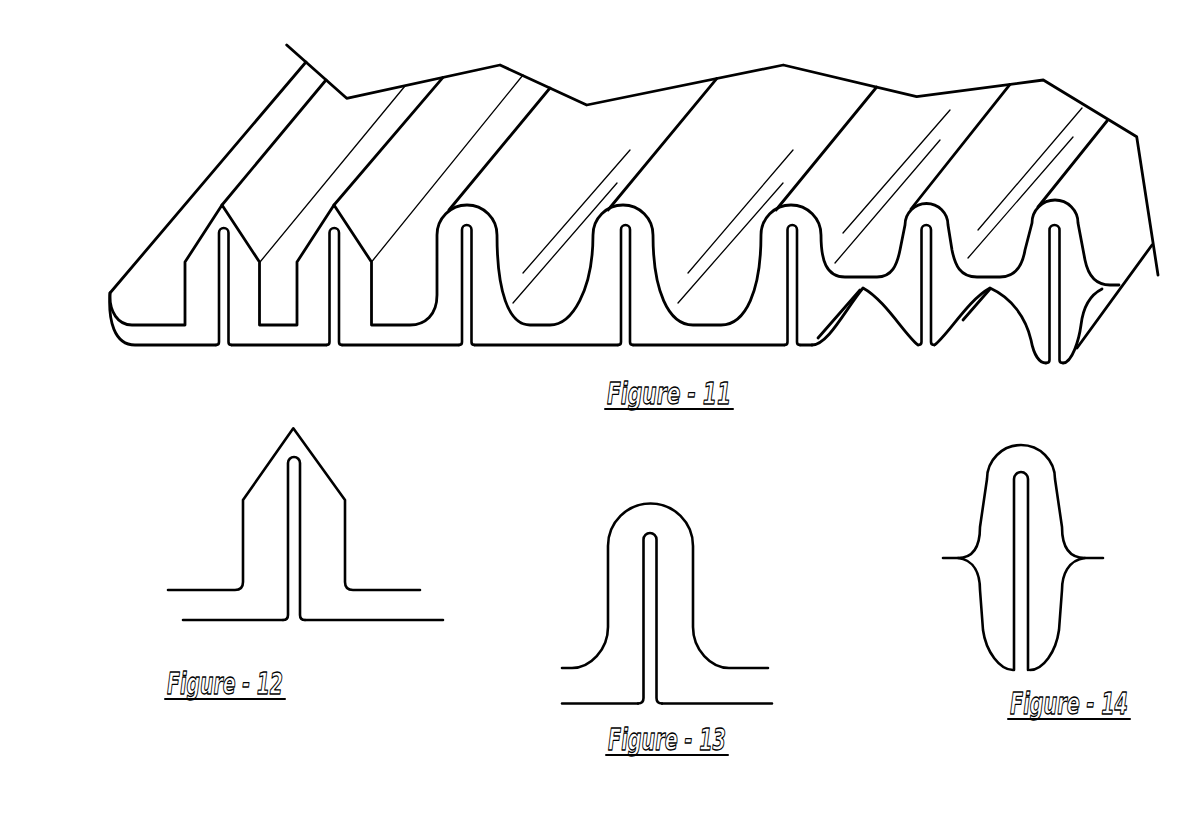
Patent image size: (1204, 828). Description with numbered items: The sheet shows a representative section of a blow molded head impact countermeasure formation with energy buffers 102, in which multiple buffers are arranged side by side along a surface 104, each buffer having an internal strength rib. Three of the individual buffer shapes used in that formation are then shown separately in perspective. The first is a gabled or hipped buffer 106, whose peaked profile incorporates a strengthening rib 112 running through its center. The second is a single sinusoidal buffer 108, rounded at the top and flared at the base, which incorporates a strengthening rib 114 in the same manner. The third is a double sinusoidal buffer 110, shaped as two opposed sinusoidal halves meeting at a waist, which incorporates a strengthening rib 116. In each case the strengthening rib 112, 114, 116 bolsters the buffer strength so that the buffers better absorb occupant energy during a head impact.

In FIG. 11, the blow molded (HIC) formation with energy buffers 102 is at (211, 177).
In FIG. 11, the surface 104 is at (740, 139).
In FIG. 12, the gabled or hipped buffer 106 is at (321, 467).
In FIG. 13, the single sinusoidal buffer 108 is at (678, 513).
In FIG. 14, the double sinusoidal buffer 110 is at (990, 462).
In FIG. 12, the strengthening rib 112 is at (295, 488).
In FIG. 13, the strengthening rib 114 is at (648, 572).
In FIG. 14, the strengthening rib 116 is at (1023, 522).